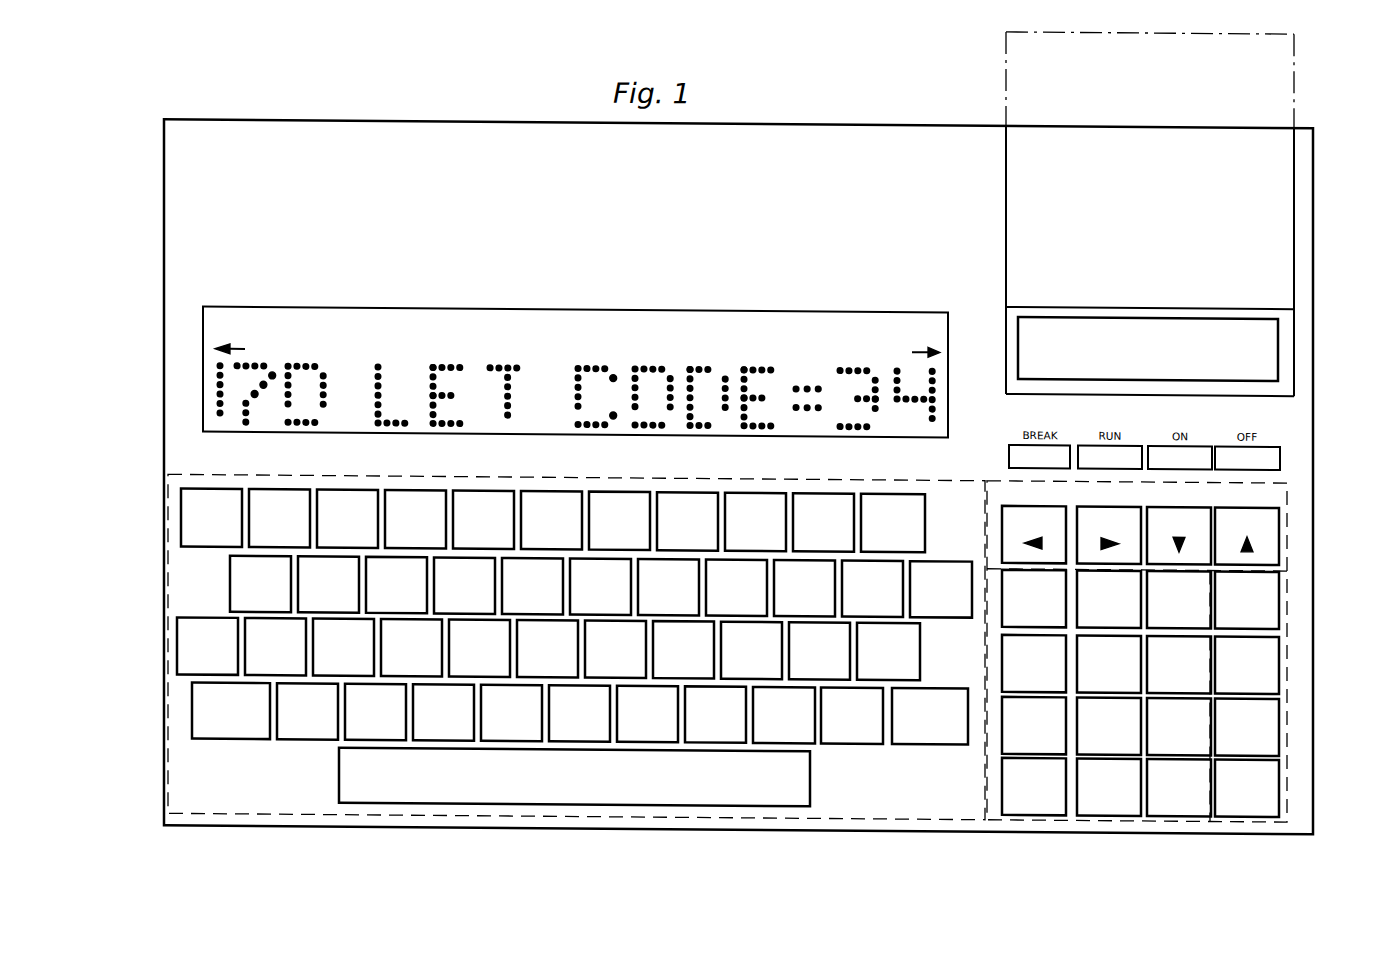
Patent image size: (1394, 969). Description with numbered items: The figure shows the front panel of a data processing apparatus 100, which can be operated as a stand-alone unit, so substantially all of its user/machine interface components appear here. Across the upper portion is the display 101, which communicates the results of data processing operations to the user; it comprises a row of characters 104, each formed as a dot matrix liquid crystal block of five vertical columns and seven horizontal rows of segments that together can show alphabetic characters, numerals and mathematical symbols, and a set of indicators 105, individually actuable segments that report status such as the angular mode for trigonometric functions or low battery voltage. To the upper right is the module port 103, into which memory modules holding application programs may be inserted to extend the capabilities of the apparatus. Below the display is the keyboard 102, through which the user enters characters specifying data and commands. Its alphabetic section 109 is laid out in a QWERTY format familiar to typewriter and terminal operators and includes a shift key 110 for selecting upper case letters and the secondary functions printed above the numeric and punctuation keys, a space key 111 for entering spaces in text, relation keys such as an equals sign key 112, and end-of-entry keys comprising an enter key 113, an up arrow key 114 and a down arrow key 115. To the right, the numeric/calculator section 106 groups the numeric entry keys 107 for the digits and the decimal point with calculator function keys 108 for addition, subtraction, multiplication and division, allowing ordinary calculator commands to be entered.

The data processing apparatus 100 is at (1343, 209).
The display 101 is at (575, 367).
The keyboard 102 is at (543, 685).
The module port 103 is at (1150, 214).
The characters 104 is at (422, 423).
The indicators 105 is at (362, 334).
The numeric/calculator section 106 is at (1181, 668).
The numeric entry keys 107 is at (1145, 813).
The calculator function keys 108 is at (1262, 812).
The alphabetic section 109 is at (218, 810).
The shift key 110 is at (192, 691).
The space key 111 is at (388, 794).
The equals sign key 112 is at (975, 538).
The enter key 113 is at (947, 731).
The up arrow key 114 is at (1197, 509).
The down arrow key 115 is at (1272, 530).